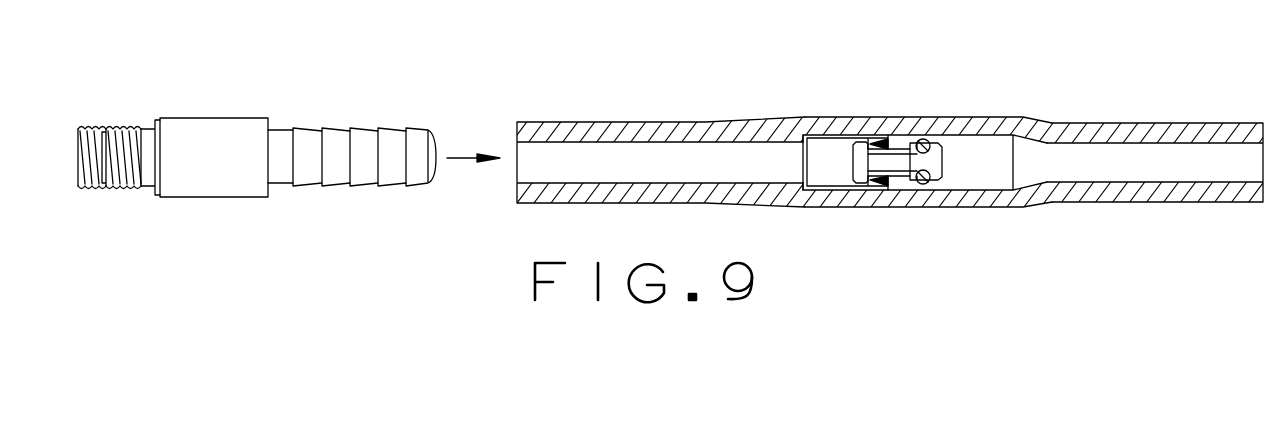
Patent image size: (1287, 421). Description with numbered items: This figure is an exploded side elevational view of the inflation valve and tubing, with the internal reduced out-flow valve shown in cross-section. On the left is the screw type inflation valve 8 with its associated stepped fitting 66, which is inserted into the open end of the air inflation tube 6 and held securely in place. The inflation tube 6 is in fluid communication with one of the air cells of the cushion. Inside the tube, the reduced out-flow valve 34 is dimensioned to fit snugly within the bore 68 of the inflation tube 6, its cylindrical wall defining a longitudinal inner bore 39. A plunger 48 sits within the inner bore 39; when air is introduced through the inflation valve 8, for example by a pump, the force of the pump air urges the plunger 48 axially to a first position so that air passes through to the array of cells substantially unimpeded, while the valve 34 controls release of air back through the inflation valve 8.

The air inflation tube 6 is at (1060, 195).
The inflation valve 8 is at (143, 119).
The reduced out-flow valve 34 is at (898, 120).
The longitudinal inner bore 39 is at (824, 152).
The plunger 48 is at (930, 142).
The stepped fitting 66 is at (337, 145).
The bore 68 is at (690, 161).